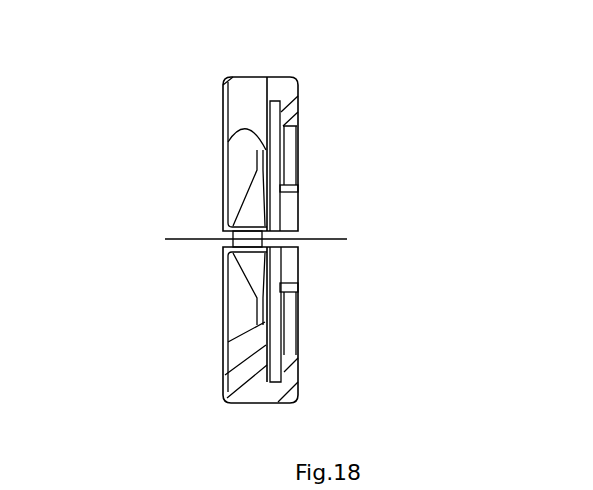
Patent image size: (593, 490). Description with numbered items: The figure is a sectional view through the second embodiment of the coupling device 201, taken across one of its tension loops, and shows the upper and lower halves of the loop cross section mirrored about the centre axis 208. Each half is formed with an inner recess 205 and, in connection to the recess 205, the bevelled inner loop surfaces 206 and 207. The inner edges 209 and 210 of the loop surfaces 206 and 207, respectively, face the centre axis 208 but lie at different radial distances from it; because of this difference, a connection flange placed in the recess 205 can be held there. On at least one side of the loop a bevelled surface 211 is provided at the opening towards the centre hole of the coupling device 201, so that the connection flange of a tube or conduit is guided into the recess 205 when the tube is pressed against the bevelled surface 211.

The coupling device 201 is at (241, 485).
The inner recess 205 is at (273, 101).
The bevelled inner loop surface 206 is at (290, 113).
The bevelled inner loop surface 207 is at (270, 100).
The centre axis 208 is at (325, 238).
The inner edge 209 is at (228, 342).
The inner edge 210 is at (283, 353).
The bevelled surface 211 is at (242, 170).